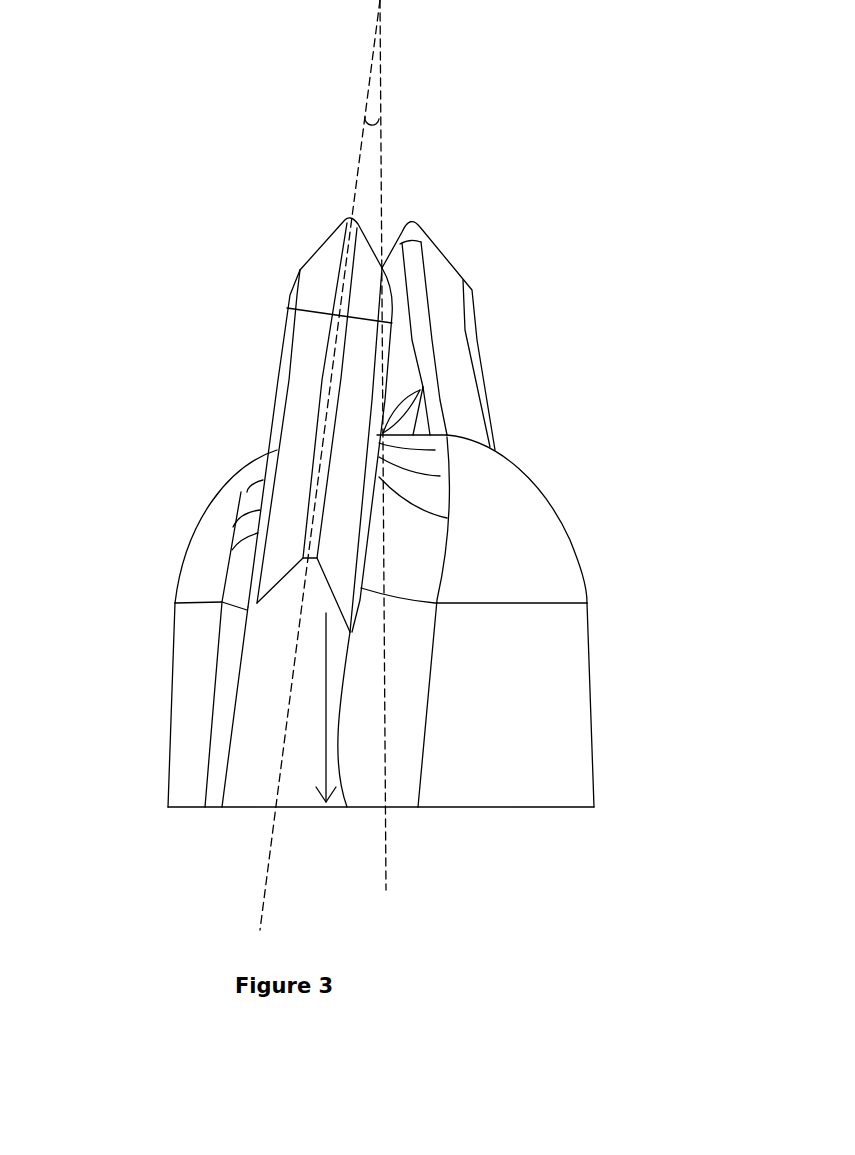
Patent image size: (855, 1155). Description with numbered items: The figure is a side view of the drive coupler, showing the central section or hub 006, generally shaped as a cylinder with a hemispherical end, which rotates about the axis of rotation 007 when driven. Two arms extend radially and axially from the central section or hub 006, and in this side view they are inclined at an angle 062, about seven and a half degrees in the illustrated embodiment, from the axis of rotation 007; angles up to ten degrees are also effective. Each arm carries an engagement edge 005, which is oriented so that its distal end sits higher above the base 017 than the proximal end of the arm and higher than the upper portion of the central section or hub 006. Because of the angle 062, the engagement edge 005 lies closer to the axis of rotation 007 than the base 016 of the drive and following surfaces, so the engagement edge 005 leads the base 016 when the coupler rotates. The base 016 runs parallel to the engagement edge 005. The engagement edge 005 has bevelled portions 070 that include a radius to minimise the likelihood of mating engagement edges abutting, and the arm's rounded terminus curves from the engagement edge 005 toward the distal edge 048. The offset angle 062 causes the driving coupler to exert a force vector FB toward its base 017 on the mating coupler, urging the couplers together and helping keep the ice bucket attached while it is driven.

The angle 062 is at (368, 118).
The engagement edge 005 is at (345, 215).
The axis of rotation 007 is at (385, 222).
The bevelled portions 070 is at (382, 268).
The distal edge 048 is at (323, 397).
The central section or hub 006 is at (508, 490).
The base 016 is at (270, 703).
The base 017 is at (433, 806).
The force vector FB is at (327, 692).